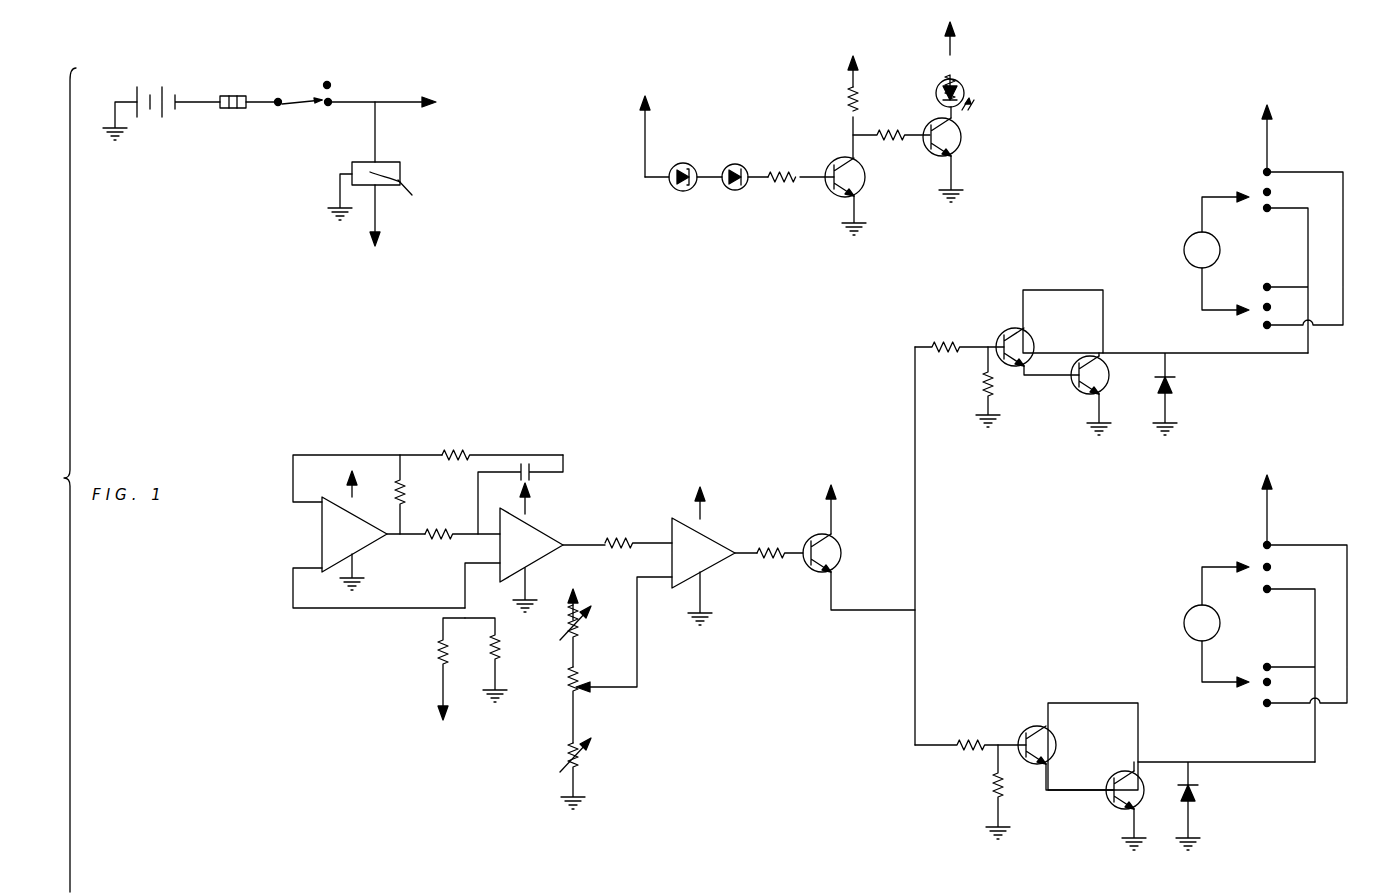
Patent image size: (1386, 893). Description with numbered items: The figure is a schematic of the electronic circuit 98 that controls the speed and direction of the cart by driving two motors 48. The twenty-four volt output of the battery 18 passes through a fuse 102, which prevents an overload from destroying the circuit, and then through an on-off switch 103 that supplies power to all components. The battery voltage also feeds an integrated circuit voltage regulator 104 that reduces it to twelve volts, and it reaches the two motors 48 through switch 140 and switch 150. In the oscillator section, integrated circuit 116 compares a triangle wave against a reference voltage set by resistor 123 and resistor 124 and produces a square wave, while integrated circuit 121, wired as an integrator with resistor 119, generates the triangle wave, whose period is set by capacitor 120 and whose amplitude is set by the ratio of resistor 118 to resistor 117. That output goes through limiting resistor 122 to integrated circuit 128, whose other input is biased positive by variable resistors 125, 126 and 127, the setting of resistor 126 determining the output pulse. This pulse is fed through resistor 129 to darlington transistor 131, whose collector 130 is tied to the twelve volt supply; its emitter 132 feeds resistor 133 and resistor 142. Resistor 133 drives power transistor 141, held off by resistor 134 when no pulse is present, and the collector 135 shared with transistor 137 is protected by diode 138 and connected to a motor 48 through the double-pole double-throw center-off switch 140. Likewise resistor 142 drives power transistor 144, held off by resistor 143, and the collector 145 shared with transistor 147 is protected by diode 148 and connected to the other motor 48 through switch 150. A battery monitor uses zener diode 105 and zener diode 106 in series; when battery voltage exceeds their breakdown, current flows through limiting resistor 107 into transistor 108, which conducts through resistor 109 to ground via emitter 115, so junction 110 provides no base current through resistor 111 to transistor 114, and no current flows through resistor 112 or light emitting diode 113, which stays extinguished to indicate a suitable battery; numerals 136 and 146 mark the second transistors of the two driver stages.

The battery 18 is at (170, 118).
The motor 48 is at (1183, 250).
The electronic circuit 98 is at (587, 142).
The fuse 102 is at (240, 95).
The on-off switch 103 is at (326, 106).
The integrated circuit voltage regulator 104 is at (408, 172).
The zener diode 105 is at (677, 190).
The zener diode 106 is at (730, 190).
The limiting resistor 107 is at (794, 184).
The transistor 108 is at (840, 160).
The resistor 109 is at (849, 104).
The junction 110 is at (860, 146).
The resistor 111 is at (892, 124).
The resistor 112 is at (956, 62).
The light emitting diode 113 is at (966, 92).
The transistor 114 is at (962, 136).
The emitter 115 is at (860, 207).
The integrated circuit 116 is at (318, 534).
The resistor 117 is at (400, 482).
The resistor 118 is at (462, 455).
The resistor 119 is at (432, 536).
The capacitor 120 is at (530, 468).
The integrated circuit 121 is at (560, 525).
The limiting resistor 122 is at (612, 538).
The resistor 123 is at (440, 652).
The resistor 124 is at (498, 662).
The variable resistor 125 is at (580, 628).
The variable resistor 126 is at (582, 693).
The variable resistor 127 is at (583, 757).
The integrated circuit 128 is at (710, 578).
The resistor 129 is at (773, 558).
The collector 130 is at (835, 525).
The transistor 131 is at (826, 572).
The emitter 132 is at (912, 615).
The resistor 133 is at (958, 347).
The resistor 134 is at (986, 385).
The collector 135 is at (1058, 290).
The 2N5301 transistor 136 is at (1050, 380).
The transistor 137 is at (1080, 390).
The diode 138 is at (1172, 392).
The switch 140 is at (1228, 192).
The power transistor 141 is at (1010, 330).
The resistor 142 is at (970, 752).
The resistor 143 is at (992, 790).
The power transistor 144 is at (1030, 735).
The collector 145 is at (1090, 703).
The 2N5301 transistor 146 is at (1084, 793).
The transistor 147 is at (1116, 806).
The diode 148 is at (1190, 798).
The switch 150 is at (1228, 568).